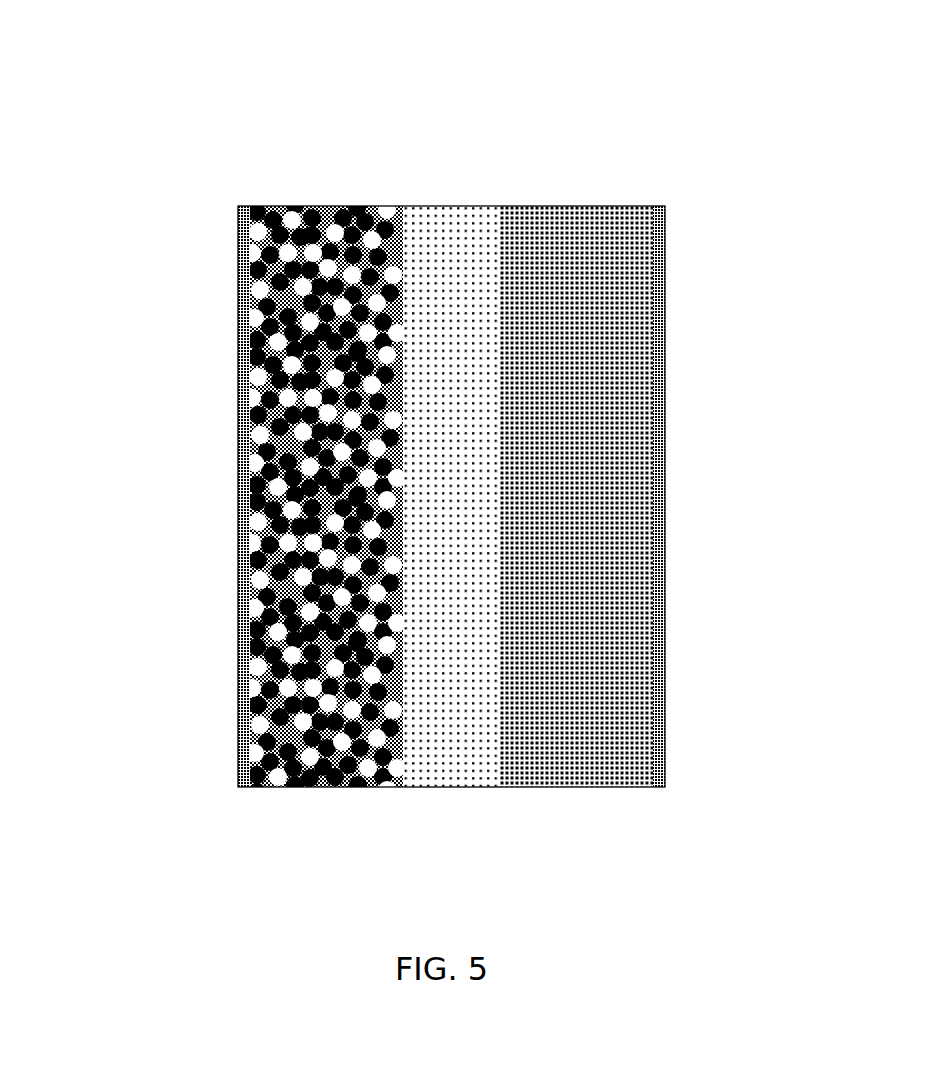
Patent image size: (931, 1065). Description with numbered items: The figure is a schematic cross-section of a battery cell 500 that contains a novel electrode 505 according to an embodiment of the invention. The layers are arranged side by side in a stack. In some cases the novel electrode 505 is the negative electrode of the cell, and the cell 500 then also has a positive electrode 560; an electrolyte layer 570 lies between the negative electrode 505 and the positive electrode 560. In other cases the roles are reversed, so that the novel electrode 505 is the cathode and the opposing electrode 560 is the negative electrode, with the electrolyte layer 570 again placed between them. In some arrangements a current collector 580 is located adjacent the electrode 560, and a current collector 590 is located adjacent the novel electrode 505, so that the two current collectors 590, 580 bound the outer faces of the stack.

The battery cell 500 is at (172, 111).
The electrode 505 is at (322, 797).
The current collector 590 is at (240, 452).
The electrolyte layer 570 is at (458, 228).
The electrode 560 is at (570, 233).
The current collector 580 is at (665, 515).